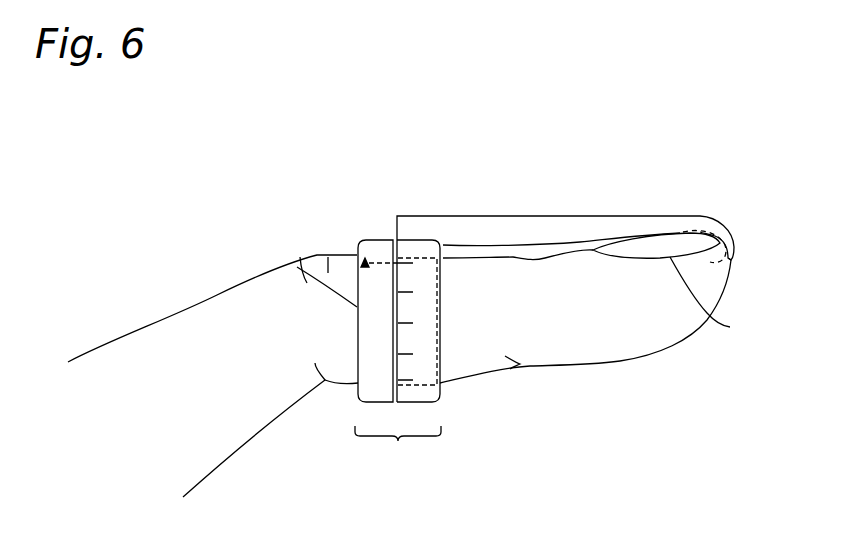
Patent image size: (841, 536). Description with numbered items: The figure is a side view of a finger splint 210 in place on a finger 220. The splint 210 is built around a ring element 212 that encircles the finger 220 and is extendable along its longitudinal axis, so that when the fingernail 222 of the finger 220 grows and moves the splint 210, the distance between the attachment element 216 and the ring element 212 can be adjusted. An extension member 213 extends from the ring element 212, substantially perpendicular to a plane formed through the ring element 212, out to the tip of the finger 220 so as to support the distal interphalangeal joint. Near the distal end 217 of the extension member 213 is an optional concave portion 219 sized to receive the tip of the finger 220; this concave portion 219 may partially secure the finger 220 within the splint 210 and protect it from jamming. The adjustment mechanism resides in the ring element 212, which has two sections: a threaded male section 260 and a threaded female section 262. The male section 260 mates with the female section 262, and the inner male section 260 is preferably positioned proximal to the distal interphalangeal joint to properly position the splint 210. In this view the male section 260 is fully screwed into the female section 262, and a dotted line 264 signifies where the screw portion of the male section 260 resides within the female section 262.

The finger splint 210 is at (378, 158).
The ring element 212 is at (398, 443).
The extension member 213 is at (503, 215).
The attachment element 216 is at (643, 235).
The distal end 217 is at (730, 230).
The concave portion 219 is at (730, 283).
The finger 220 is at (647, 355).
The fingernail 222 is at (730, 327).
The threaded male section 260 is at (298, 263).
The threaded female section 262 is at (440, 333).
The dotted line 264 is at (410, 388).